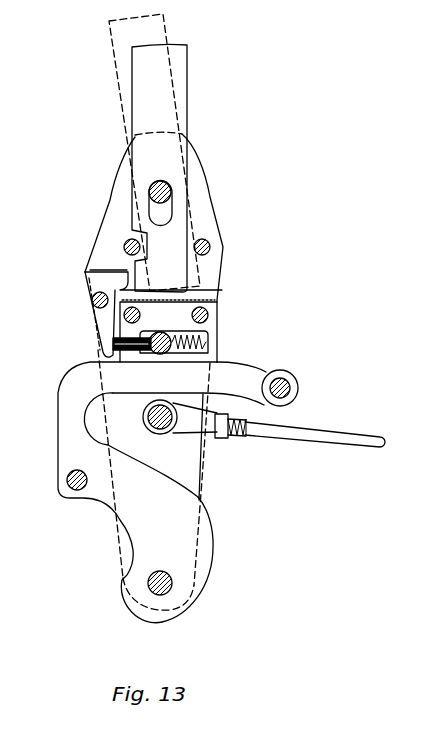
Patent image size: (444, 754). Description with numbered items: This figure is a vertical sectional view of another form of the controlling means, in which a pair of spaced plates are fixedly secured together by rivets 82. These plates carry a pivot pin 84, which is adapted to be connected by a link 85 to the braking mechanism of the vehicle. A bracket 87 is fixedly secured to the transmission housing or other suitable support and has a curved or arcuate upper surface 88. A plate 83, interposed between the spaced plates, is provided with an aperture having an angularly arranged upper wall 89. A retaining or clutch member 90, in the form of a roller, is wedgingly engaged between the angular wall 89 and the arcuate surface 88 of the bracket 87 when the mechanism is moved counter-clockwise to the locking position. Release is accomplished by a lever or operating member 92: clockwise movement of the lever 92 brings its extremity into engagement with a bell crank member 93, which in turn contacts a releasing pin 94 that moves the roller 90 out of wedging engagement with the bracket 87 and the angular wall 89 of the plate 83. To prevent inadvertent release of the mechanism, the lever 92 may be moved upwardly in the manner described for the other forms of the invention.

The rivets 82 is at (205, 243).
The plate 83 is at (180, 305).
The pivot pin 84 is at (150, 428).
The link 85 is at (305, 428).
The bracket 87 is at (68, 428).
The arcuate upper surface 88 is at (225, 363).
The angularly arranged upper wall 89 is at (177, 331).
The retaining or clutch member 90 is at (157, 355).
The lever or operating member 92 is at (187, 100).
The bell crank member 93 is at (85, 273).
The releasing pin 94 is at (113, 344).